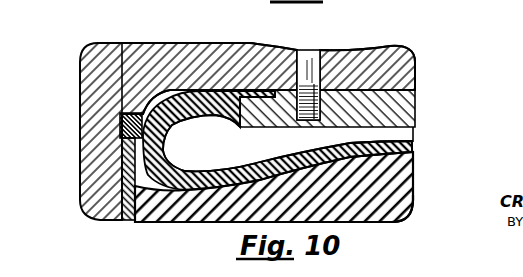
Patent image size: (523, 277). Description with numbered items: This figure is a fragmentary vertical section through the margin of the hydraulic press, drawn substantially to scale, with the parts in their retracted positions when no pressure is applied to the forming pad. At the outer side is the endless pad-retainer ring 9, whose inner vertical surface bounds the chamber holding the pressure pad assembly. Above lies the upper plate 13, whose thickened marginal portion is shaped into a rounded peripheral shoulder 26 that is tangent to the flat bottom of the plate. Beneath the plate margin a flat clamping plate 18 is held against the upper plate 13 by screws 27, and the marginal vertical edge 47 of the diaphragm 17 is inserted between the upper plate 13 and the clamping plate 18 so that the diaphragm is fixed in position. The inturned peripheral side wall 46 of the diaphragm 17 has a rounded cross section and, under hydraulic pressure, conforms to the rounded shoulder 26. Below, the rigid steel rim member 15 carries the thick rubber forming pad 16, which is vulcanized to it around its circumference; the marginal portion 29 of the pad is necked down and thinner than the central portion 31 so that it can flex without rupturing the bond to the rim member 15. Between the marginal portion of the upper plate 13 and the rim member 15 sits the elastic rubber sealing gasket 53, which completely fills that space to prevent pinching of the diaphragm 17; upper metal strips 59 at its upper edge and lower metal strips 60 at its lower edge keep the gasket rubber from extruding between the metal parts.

The pad-retainer ring 9 is at (88, 63).
The rounded peripheral shoulder 26 is at (152, 56).
The marginal vertical edge 47 is at (280, 98).
The screws 27 is at (325, 56).
The upper plate 13 is at (401, 57).
The clamping plate 18 is at (415, 108).
The upper metal strips 59 is at (120, 114).
The sealing gasket 53 is at (120, 131).
The lower metal strips 60 is at (81, 142).
The peripheral side wall 46 is at (186, 116).
The rim member 15 is at (122, 222).
The marginal portion of the pad 29 is at (173, 224).
The forming pad 16 is at (388, 222).
The central portion of the pad 31 is at (413, 200).
The diaphragm 17 is at (413, 150).